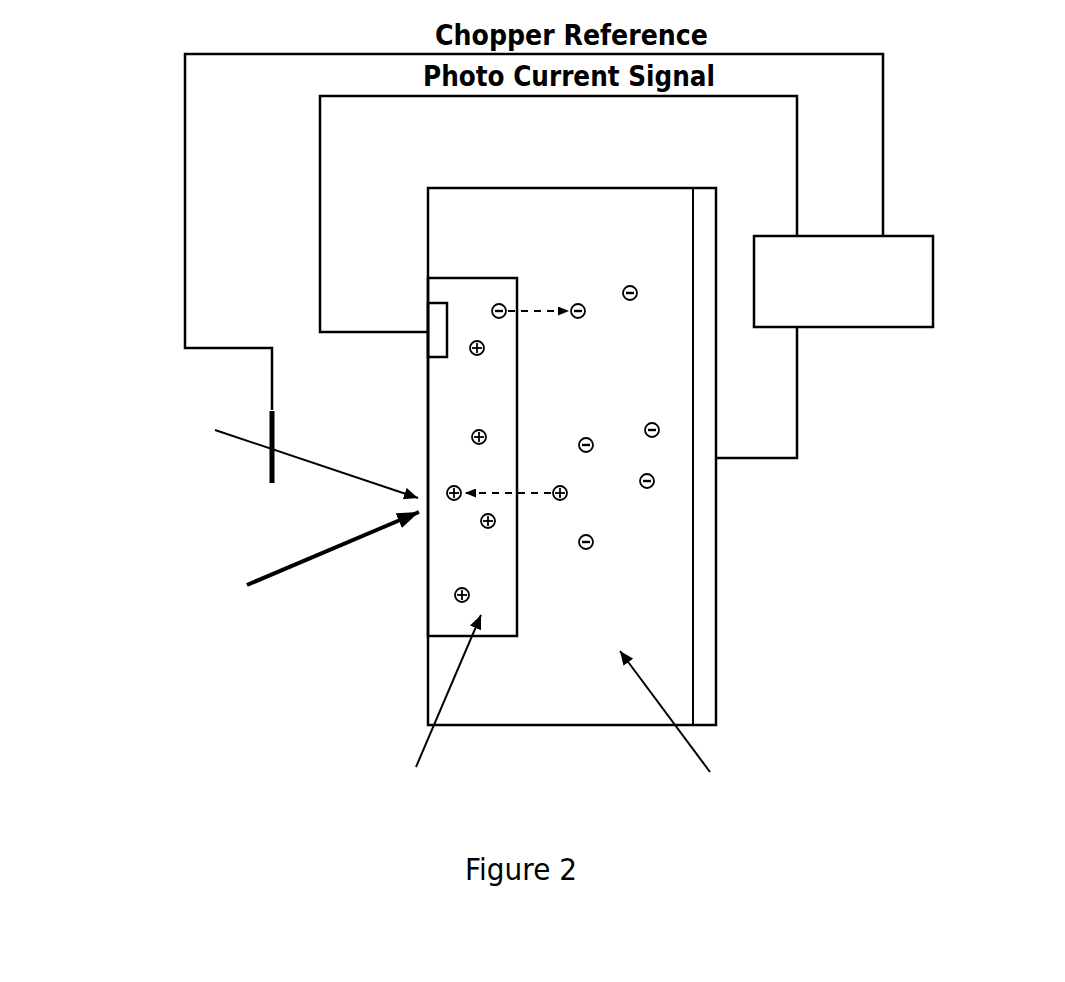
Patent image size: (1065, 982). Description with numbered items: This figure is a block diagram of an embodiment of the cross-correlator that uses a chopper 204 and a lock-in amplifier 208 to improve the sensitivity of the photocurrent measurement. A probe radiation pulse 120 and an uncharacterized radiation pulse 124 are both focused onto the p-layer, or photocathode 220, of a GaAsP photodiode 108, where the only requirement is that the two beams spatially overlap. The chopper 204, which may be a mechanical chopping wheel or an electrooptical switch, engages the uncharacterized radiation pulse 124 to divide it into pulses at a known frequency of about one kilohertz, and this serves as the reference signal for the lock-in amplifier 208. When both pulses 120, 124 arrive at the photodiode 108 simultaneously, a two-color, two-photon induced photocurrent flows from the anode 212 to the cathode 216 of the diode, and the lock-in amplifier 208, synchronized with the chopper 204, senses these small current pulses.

The photodiode 108 is at (468, 184).
The anode 212 is at (437, 312).
The chopper 204 is at (273, 433).
The uncharacterized radiation pulse 124 is at (322, 467).
The probe radiation pulse 120 is at (308, 563).
The photocathode 220 is at (435, 618).
The cathode 216 is at (703, 612).
The lock-in amplifier 208 is at (837, 327).